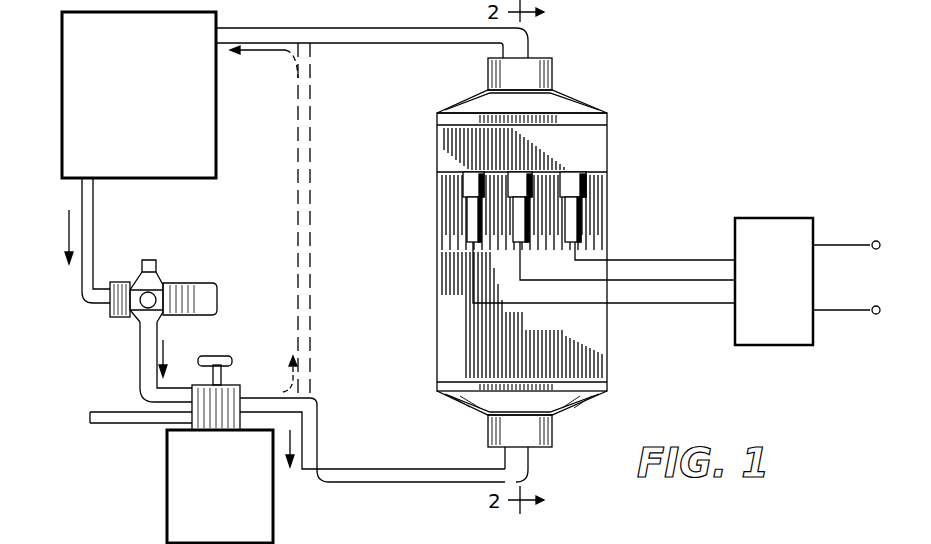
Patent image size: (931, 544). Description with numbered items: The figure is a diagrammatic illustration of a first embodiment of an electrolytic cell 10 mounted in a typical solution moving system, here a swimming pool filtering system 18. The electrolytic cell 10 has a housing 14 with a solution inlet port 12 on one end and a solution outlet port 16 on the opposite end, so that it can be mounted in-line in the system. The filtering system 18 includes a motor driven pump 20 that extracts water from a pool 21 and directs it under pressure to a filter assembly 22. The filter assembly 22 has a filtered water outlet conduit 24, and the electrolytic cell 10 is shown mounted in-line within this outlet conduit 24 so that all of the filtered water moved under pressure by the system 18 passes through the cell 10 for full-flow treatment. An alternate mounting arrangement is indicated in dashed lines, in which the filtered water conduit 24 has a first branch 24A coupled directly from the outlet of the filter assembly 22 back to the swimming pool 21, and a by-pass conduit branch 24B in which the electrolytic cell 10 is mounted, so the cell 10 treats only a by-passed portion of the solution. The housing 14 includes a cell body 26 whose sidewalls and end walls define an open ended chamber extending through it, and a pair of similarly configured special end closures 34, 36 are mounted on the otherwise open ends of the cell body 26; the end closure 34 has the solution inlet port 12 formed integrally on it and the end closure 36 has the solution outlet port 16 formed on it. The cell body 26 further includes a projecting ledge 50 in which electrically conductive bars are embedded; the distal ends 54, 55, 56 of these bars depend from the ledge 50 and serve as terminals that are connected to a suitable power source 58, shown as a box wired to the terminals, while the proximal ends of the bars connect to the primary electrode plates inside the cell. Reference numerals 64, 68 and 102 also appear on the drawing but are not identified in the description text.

The electrolytic cell 10 is at (559, 262).
The solution inlet port 12 is at (552, 430).
The housing 14 is at (632, 350).
The solution outlet port 16 is at (552, 82).
The swimming pool filtering system 18 is at (247, 226).
The motor driven pump 20 is at (157, 283).
The pool 21 is at (216, 152).
The filter assembly 22 is at (167, 470).
The filtered water outlet conduit 24 is at (262, 398).
The first branch 24A is at (312, 300).
The by-pass conduit branch 24B is at (380, 44).
The cell body 26 is at (458, 340).
The end closure 34 is at (572, 420).
The end closure 36 is at (470, 86).
The projecting ledge 50 is at (600, 140).
The distal end of conductive bar 54 is at (584, 229).
The distal end of conductive bar 55 is at (530, 242).
The distal end of conductive bar 56 is at (466, 215).
The power source 58 is at (797, 218).
The lower end wall 64 is at (478, 402).
The bottom cone 68 is at (595, 396).
The top cone 102 is at (598, 108).